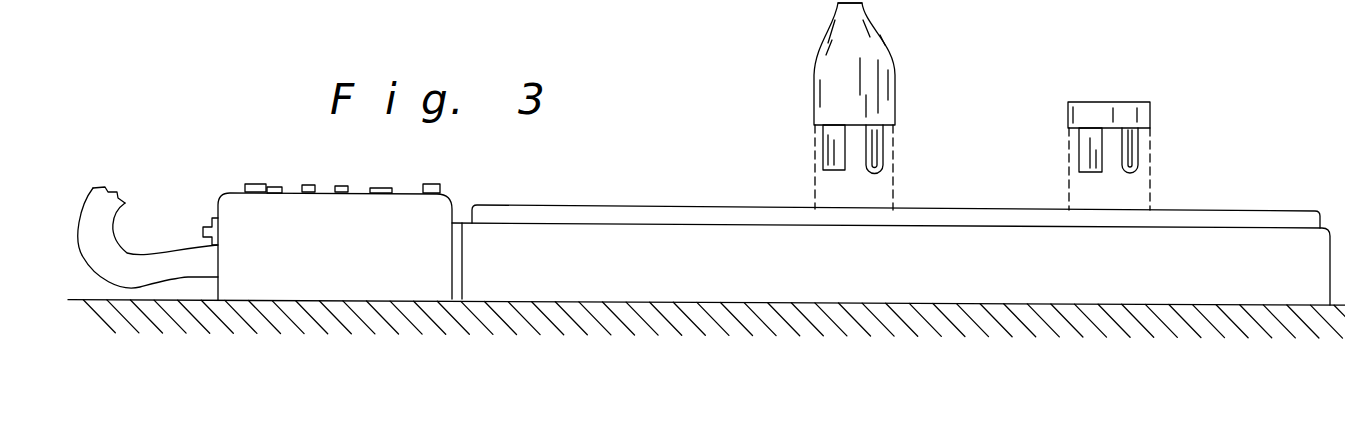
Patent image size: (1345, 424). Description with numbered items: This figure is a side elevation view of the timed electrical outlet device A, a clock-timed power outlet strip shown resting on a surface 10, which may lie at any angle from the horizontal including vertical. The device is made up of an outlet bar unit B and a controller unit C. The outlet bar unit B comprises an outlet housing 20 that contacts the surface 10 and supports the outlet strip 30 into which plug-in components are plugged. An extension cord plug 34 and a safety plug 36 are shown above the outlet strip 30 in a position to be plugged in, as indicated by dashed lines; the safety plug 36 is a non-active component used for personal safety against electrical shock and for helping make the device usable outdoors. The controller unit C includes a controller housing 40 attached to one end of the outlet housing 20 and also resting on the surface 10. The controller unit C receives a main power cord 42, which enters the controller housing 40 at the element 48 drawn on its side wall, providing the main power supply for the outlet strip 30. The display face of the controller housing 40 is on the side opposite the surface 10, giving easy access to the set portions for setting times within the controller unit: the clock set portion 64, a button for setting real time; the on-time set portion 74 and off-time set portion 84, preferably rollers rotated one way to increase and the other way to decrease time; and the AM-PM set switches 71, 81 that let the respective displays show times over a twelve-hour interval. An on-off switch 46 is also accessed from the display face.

The surface 10 is at (833, 305).
The outlet housing 20 is at (993, 278).
The outlet strip 30 is at (963, 208).
The extension cord plug 34 is at (893, 78).
The safety plug 36 is at (1150, 110).
The controller housing 40 is at (381, 265).
The main power cord 42 is at (187, 278).
The on-off switch 46 is at (442, 188).
The strain relief 48 is at (207, 222).
The clock set portion 64 is at (248, 183).
The AM-PM set switch 71 is at (307, 183).
The on-time set portion 74 is at (278, 187).
The AM-PM set switch 81 is at (345, 185).
The off-time set portion 84 is at (385, 187).
The timed electrical outlet device A is at (630, 157).
The outlet bar unit B is at (718, 202).
The controller unit C is at (233, 183).